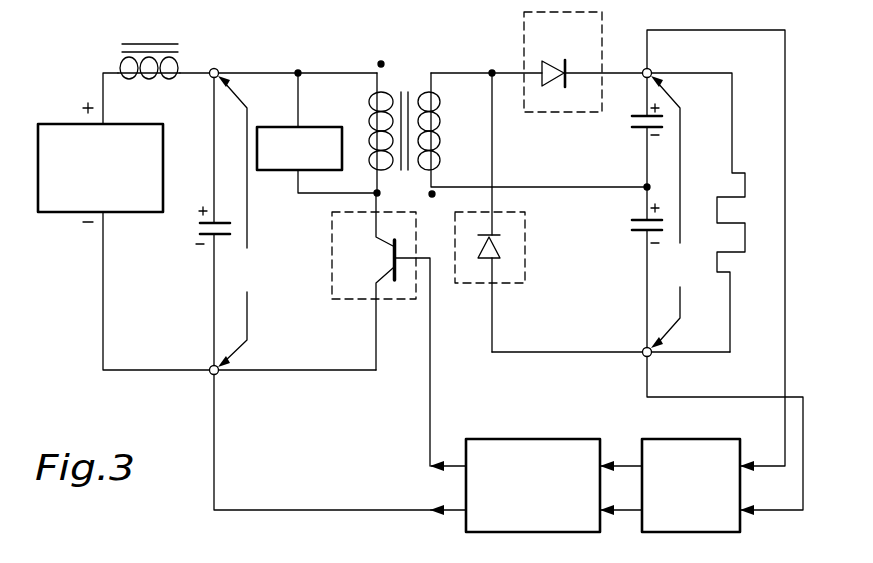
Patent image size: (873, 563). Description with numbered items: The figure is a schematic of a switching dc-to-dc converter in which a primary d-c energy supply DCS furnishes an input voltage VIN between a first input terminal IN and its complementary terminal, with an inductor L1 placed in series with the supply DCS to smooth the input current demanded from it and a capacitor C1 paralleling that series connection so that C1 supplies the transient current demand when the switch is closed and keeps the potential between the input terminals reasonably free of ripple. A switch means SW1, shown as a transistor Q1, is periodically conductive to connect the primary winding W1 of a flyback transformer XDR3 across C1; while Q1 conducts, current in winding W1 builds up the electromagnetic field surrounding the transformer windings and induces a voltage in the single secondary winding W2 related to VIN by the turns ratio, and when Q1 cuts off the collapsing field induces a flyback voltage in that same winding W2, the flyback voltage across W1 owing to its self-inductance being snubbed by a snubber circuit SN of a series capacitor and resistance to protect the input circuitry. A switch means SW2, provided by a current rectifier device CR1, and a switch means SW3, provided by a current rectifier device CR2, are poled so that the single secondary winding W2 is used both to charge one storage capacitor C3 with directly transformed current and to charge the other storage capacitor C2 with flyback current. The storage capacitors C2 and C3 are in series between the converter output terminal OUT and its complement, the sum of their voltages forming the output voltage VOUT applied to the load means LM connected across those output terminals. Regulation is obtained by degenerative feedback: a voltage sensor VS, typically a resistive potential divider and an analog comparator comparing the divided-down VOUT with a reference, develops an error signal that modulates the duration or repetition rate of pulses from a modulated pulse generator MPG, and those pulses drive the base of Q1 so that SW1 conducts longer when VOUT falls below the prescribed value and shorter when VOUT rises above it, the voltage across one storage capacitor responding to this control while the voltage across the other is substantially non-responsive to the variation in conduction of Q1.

The primary d-c energy supply DCS is at (125, 213).
The inductor L1 is at (149, 49).
The first input terminal IN is at (216, 69).
The capacitor C1 is at (201, 225).
The input voltage VIN is at (240, 221).
The snubber circuit SN is at (278, 126).
The flyback transformer XDR3 is at (422, 57).
The primary winding W1 is at (365, 128).
The secondary winding W2 is at (445, 129).
The switch means SW1 is at (376, 329).
The transistor Q1 is at (394, 329).
The switch means SW2 is at (497, 211).
The current rectifier device CR1 is at (505, 300).
The switch means SW3 is at (554, 57).
The current rectifier device CR2 is at (500, 20).
The converter output terminal OUT is at (650, 70).
The storage capacitor C3 is at (634, 128).
The storage capacitor C2 is at (635, 233).
The output voltage VOUT is at (676, 212).
The load means LM is at (739, 214).
The modulated pulse generator MPG is at (523, 437).
The voltage sensor VS is at (678, 437).